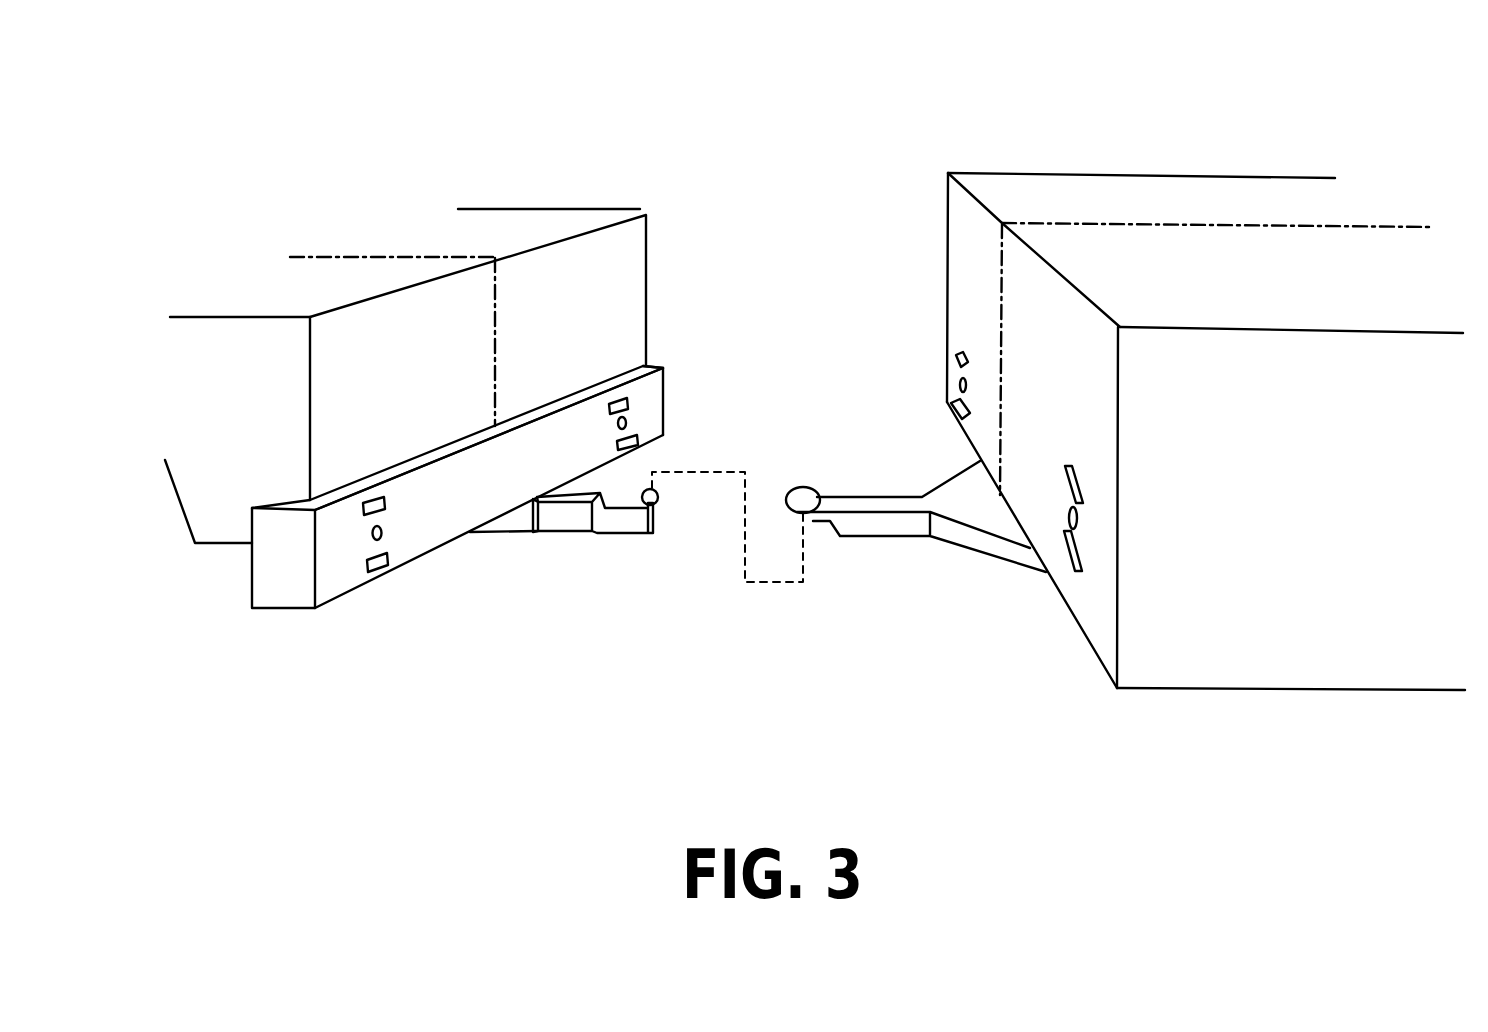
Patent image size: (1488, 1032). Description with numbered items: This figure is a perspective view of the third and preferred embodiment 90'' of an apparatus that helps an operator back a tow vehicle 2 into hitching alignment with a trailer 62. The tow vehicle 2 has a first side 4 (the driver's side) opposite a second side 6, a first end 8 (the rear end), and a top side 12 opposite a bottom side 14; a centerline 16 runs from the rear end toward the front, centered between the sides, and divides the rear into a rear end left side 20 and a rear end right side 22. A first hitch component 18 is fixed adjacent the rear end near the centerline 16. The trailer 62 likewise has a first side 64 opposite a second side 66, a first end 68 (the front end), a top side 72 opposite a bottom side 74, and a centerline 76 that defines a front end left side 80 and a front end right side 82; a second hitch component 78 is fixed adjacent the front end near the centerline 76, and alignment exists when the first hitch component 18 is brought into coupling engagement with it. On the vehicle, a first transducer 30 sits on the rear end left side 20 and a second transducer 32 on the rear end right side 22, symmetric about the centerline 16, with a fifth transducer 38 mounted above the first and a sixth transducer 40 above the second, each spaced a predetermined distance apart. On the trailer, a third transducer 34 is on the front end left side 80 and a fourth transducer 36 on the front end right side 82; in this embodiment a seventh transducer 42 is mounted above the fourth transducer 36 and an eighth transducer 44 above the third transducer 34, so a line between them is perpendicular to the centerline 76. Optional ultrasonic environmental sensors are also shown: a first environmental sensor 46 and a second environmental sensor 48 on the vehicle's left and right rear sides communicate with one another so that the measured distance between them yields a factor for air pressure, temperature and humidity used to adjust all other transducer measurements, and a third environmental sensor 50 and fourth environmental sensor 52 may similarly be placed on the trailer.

The tow vehicle 2 is at (142, 562).
The first side 4 is at (277, 355).
The second side 6 is at (558, 207).
The first end 8 is at (569, 370).
The top side 12 is at (313, 299).
The bottom side 14 is at (247, 562).
The centerline 16 is at (367, 257).
The first hitch component 18 is at (657, 502).
The rear end left side 20 is at (437, 530).
The rear end right side 22 is at (605, 462).
The first sensor/transducer 30 is at (400, 551).
The second transducer 32 is at (638, 440).
The third transducer 34 is at (1077, 568).
The fourth transducer 36 is at (950, 400).
The fifth transducer 38 is at (367, 497).
The sixth transducer 40 is at (628, 401).
The seventh transducer 42 is at (958, 352).
The eighth transducer 44 is at (1067, 477).
The first environmental sensor 46 is at (382, 533).
The second environmental sensor 48 is at (627, 422).
The third environmental sensor 50 is at (953, 362).
The fourth environmental sensor 52 is at (1077, 525).
The trailer 62 is at (1133, 715).
The first side 64 is at (1262, 612).
The second side 66 is at (1050, 168).
The first end 68 is at (1071, 365).
The top side 72 is at (1246, 288).
The bottom side 74 is at (1207, 695).
The centerline 76 is at (1220, 226).
The second hitch component 78 is at (805, 517).
The front end left side 80 is at (1080, 600).
The front end right side 82 is at (973, 436).
The third embodiment 90'' is at (727, 625).